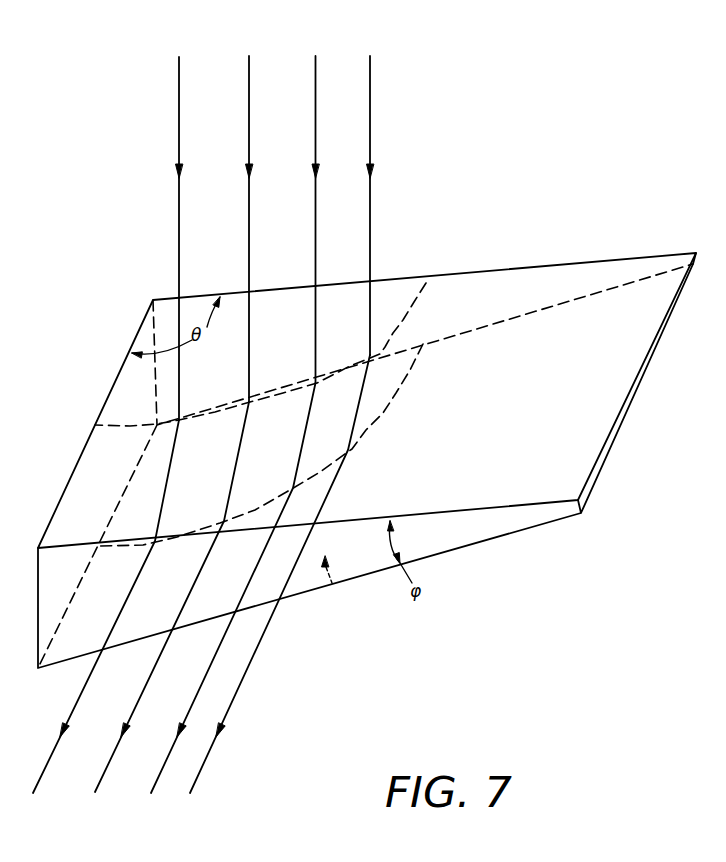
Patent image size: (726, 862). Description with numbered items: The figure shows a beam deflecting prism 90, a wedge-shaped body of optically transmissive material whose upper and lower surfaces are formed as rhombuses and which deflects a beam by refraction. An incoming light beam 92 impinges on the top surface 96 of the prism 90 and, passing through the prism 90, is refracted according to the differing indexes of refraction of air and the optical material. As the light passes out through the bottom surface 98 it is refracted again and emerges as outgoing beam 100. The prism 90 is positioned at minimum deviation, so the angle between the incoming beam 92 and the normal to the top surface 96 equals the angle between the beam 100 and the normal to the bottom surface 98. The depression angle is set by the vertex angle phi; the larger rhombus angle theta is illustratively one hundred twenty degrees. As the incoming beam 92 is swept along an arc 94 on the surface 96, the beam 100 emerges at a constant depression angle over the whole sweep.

The beam deflecting prism 90 is at (560, 273).
The light beam 92 is at (248, 74).
The arc 94 is at (412, 296).
The surface 96 is at (506, 447).
The surface 98 is at (332, 583).
The beam 100 is at (100, 777).